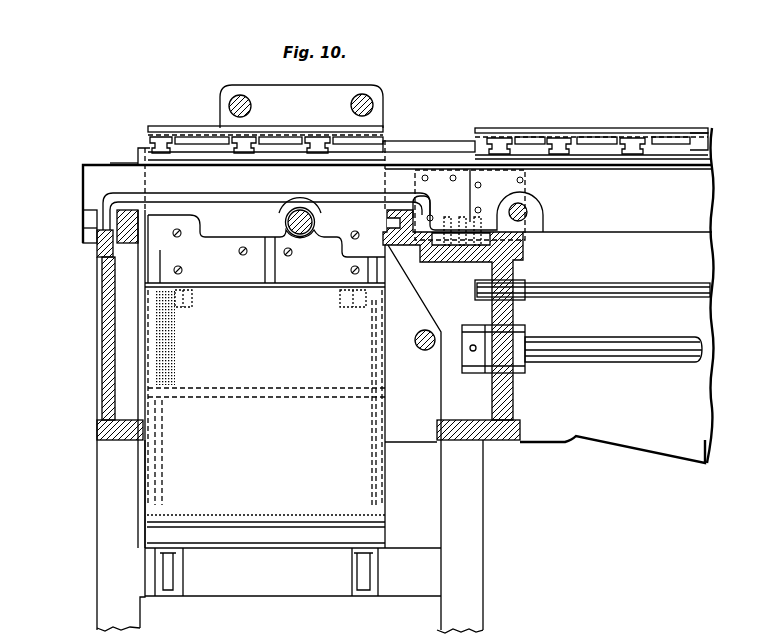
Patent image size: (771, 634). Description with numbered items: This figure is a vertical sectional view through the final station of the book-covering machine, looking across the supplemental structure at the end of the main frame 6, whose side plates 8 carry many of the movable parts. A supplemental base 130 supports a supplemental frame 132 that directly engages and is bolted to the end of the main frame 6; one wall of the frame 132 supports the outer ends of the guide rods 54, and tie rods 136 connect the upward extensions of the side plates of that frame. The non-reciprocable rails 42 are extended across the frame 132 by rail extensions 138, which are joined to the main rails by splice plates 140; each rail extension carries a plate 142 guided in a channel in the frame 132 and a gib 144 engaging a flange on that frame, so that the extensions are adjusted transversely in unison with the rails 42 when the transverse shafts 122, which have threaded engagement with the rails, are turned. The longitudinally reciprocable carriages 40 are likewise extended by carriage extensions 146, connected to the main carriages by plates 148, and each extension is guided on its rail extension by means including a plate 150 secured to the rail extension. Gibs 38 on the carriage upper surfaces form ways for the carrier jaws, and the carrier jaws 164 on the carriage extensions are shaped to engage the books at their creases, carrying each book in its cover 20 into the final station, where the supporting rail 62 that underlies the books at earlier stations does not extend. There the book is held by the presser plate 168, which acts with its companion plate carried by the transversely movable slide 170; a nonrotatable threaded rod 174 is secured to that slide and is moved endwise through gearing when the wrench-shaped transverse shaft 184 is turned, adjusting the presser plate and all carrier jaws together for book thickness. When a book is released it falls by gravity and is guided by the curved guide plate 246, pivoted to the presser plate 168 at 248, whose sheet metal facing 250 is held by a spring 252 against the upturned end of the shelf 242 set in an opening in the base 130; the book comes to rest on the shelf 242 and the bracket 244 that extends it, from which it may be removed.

The main frame 6 is at (537, 455).
The side plates 8 is at (612, 442).
The cover 20 is at (190, 127).
The gibs 38 is at (157, 140).
The carriages 40 is at (633, 165).
The rails 42 is at (693, 227).
The guide rods 54 is at (605, 340).
The supporting rail 62 is at (560, 290).
The transverse shafts 122 is at (535, 207).
The supplemental base 130 is at (472, 528).
The supplemental frame 132 is at (104, 322).
The tie rods 136 is at (236, 96).
The rail extensions 138 is at (90, 181).
The splice plates 140 is at (530, 188).
The plate 142 is at (460, 256).
The gib 144 is at (88, 237).
The carriage extensions 146 is at (138, 152).
The plates 148 is at (422, 143).
The plate 150 is at (110, 164).
The carrier jaws 164 is at (197, 133).
The presser plate 168 is at (258, 288).
The slide 170 is at (227, 229).
The threaded rod 174 is at (305, 240).
The transverse shaft 184 is at (420, 350).
The shelf 242 is at (263, 535).
The bracket 244 is at (357, 572).
The curved guide plate 246 is at (150, 463).
The pivot 248 is at (232, 312).
The sheet metal facing 250 is at (266, 397).
The spring 252 is at (178, 362).